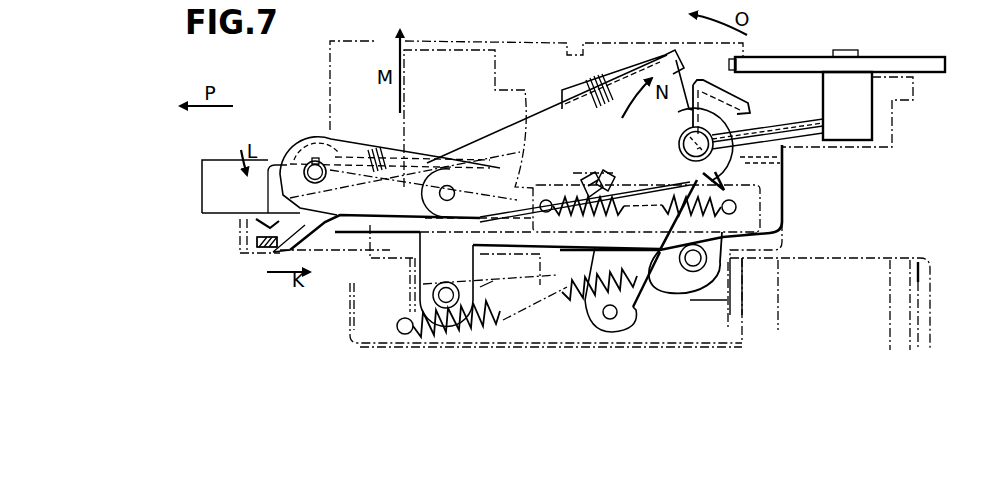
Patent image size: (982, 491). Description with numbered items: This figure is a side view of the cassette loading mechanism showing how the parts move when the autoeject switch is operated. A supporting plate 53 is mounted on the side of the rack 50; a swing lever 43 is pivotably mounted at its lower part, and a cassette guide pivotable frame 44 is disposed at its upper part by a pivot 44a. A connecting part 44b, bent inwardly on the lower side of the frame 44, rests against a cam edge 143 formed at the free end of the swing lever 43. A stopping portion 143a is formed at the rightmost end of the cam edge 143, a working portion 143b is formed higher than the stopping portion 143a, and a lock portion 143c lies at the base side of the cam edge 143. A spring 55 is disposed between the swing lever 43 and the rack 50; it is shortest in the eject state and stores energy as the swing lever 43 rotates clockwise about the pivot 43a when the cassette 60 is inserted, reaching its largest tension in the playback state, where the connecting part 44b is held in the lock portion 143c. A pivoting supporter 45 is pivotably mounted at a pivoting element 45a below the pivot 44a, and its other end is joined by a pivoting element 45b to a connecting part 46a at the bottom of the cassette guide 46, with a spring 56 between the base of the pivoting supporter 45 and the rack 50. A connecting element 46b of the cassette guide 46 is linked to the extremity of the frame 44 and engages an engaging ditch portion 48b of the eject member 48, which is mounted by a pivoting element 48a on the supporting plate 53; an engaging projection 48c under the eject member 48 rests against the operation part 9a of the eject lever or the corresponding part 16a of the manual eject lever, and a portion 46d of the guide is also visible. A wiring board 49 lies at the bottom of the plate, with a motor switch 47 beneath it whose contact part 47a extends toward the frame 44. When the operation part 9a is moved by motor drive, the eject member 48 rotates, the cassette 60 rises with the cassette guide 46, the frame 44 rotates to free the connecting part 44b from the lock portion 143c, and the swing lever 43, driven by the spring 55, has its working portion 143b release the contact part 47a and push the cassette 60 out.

The supporting plate 53 is at (352, 41).
The cassette guide pivotable frame 44 is at (580, 100).
The working portion 143b is at (685, 72).
The contact part 47a is at (735, 108).
The wiring board 49 is at (893, 59).
The motor switch 47 is at (858, 108).
The pivot 44a is at (783, 152).
The stopping portion 143a is at (750, 190).
The spring 56 is at (745, 236).
The rack 50 is at (840, 258).
The pivoting element 45a is at (700, 266).
The swing lever 43 is at (652, 258).
The pivot 43a is at (615, 317).
The pivoting supporter 45 is at (590, 245).
The pivoting element 45b is at (453, 297).
The connecting part 46a is at (412, 277).
The spring 55 is at (495, 316).
The cassette guide 46 is at (359, 232).
The engaging projection 48c is at (293, 223).
The operation part 9a is at (252, 255).
The projection 16a is at (226, 268).
The cassette 60 is at (215, 206).
The portion of slide member 46d is at (266, 221).
The pivoting element 48a is at (318, 157).
The eject member 48 is at (360, 163).
The engaging ditch portion 48b is at (428, 167).
The connecting element 46b is at (450, 167).
The connecting part 44b is at (590, 179).
The lock portion 143c is at (613, 172).
The cam edge 143 is at (659, 160).